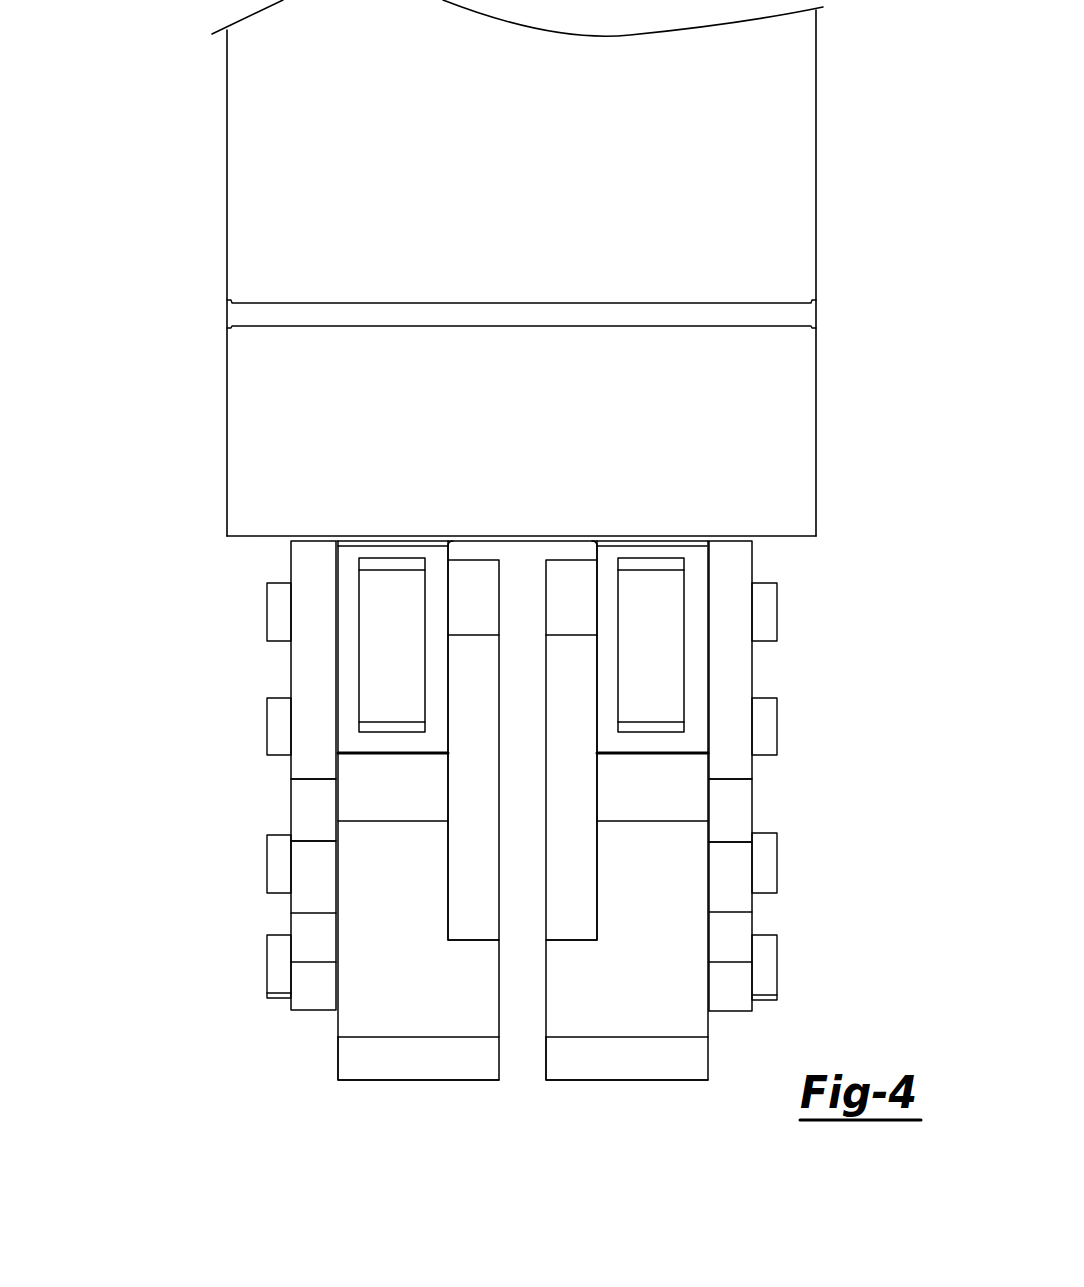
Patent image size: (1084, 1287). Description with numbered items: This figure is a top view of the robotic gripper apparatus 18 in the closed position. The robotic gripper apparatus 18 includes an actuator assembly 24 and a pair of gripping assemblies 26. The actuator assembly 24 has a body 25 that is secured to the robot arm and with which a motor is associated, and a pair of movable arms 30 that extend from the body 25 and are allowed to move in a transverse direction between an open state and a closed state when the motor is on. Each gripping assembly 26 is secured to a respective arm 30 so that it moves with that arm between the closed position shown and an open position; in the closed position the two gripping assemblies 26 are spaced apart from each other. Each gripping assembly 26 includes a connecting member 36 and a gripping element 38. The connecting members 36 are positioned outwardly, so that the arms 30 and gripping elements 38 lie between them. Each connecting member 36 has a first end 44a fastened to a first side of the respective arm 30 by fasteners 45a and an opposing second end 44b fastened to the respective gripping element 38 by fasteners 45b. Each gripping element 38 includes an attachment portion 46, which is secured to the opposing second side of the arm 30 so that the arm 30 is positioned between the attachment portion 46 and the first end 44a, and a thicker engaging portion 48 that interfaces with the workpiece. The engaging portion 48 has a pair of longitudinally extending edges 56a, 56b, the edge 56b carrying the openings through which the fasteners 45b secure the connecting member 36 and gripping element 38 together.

The robotic gripper apparatus 18 is at (569, 268).
The actuator assembly 24 is at (792, 105).
The body 25 is at (797, 399).
The gripping assembly 26 is at (470, 800).
The arm 30 is at (377, 556).
The connecting member 36 is at (282, 791).
The gripping element 38 is at (445, 815).
The first end 44a is at (310, 543).
The second end 44b is at (312, 1012).
The fasteners 45a is at (273, 628).
The fasteners 45b is at (273, 868).
The attachment portion 46 is at (476, 650).
The engaging portion 48 is at (456, 1086).
The longitudinally extending edge 56a is at (502, 1023).
The longitudinally extending edge 56b is at (334, 1052).